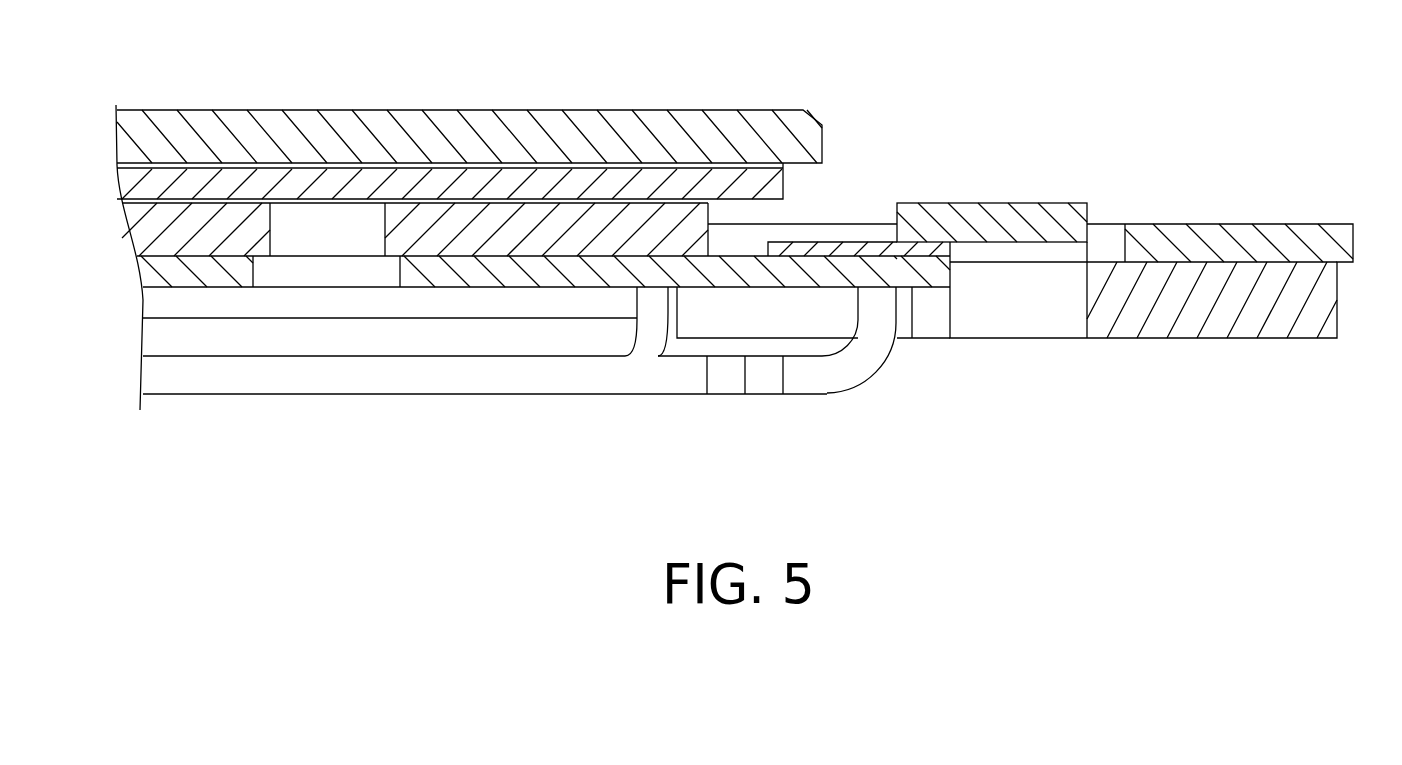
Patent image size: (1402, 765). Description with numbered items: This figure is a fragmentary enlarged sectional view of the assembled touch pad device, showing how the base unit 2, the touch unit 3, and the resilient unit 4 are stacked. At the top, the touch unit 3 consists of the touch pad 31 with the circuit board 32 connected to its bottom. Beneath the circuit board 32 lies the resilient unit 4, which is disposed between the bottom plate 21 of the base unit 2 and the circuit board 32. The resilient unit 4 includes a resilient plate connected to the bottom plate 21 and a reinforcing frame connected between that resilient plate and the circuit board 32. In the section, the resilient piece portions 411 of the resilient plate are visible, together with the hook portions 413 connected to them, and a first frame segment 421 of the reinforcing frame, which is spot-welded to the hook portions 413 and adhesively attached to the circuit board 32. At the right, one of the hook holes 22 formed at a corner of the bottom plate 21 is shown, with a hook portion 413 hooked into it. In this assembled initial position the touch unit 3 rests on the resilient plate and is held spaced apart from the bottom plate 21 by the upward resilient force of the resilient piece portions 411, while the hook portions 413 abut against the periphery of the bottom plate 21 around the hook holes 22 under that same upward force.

The base unit 2 is at (1261, 364).
The bottom plate 21 is at (185, 394).
The hook holes 22 is at (965, 252).
The touch unit 3 is at (516, 90).
The touch pad 31 is at (575, 143).
The circuit board 32 is at (630, 187).
The resilient unit 4 is at (406, 208).
The resilient piece portions 411 is at (222, 278).
The hook portions 413 is at (930, 277).
The first frame segments 421 is at (685, 232).